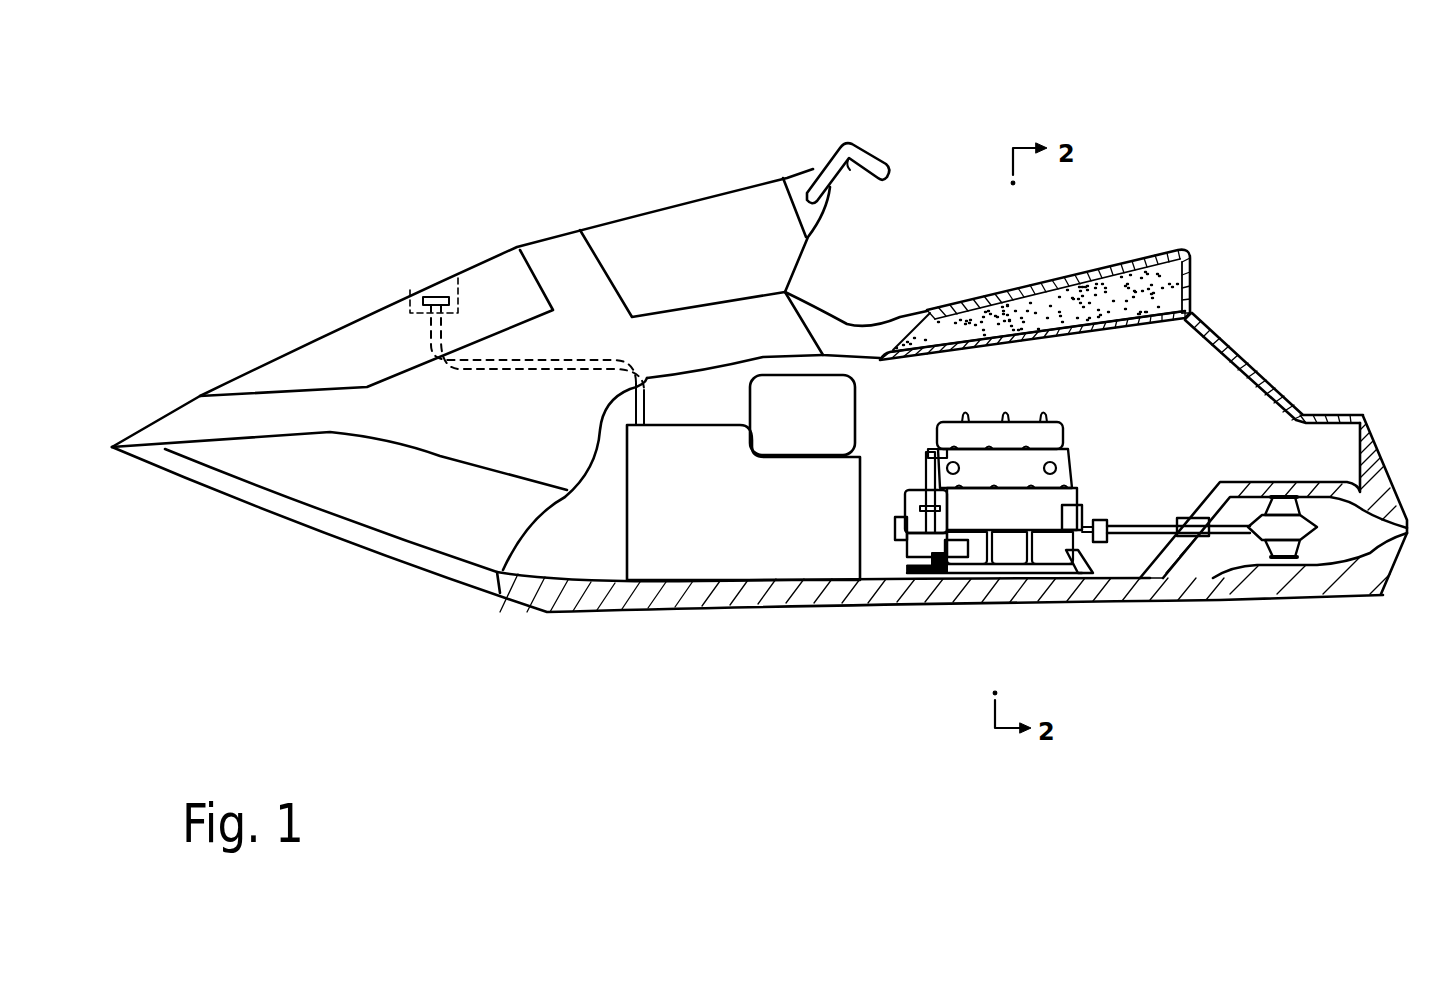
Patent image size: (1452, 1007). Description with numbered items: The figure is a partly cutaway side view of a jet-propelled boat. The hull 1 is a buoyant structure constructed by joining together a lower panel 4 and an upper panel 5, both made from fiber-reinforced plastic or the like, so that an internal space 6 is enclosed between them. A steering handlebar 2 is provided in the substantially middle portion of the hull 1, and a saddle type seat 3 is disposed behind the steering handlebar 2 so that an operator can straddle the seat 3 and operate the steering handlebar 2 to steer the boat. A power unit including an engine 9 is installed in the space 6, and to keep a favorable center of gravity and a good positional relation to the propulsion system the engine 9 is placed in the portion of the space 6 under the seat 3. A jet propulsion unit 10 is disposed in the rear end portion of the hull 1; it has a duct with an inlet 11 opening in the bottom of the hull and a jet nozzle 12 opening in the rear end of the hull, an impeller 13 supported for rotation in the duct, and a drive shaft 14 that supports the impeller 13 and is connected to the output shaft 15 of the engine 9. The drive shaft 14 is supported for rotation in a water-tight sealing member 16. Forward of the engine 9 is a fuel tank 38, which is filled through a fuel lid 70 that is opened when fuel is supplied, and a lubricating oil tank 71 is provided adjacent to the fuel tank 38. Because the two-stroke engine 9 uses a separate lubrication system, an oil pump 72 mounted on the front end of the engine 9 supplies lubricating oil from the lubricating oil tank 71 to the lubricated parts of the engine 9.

The hull 1 is at (543, 232).
The steering handlebar 2 is at (842, 146).
The saddle type seat 3 is at (1131, 264).
The lower panel 4 is at (865, 604).
The upper panel 5 is at (1253, 369).
The internal space 6 is at (1156, 394).
The engine 9 is at (1069, 452).
The jet propulsion unit 10 is at (1238, 480).
The inlet 11 is at (1190, 588).
The jet nozzle 12 is at (1407, 520).
The impeller 13 is at (1285, 560).
The drive shaft 14 is at (1133, 527).
The output shaft 15 is at (1086, 548).
The water-tight sealing member 16 is at (1185, 516).
The fuel tank 38 is at (628, 541).
The fuel lid 70 is at (431, 296).
The lubricating oil tank 71 is at (857, 393).
The oil pump 72 is at (896, 519).